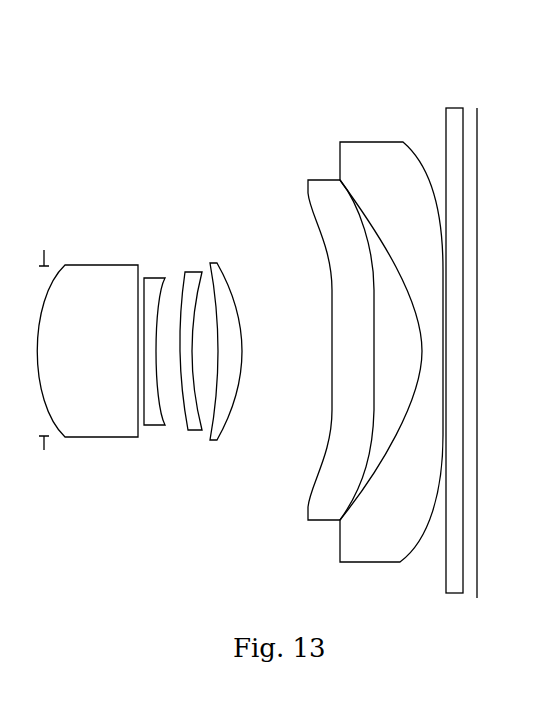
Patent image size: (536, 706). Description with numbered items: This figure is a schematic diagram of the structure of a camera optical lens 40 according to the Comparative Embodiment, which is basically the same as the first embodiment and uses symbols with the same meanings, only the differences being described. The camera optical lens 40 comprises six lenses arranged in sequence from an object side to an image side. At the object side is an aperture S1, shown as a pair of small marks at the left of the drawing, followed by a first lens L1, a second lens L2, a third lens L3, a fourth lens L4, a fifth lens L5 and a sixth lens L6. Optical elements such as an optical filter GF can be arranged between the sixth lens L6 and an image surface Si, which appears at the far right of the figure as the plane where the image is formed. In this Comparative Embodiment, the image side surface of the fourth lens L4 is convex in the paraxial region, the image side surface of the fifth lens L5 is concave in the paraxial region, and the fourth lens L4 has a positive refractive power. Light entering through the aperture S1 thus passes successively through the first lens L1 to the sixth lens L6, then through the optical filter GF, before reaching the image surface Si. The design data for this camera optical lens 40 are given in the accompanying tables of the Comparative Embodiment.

The camera optical lens 40 is at (293, 49).
The aperture S1 is at (41, 337).
The first lens L1 is at (87, 332).
The second lens L2 is at (154, 336).
The third lens L3 is at (191, 338).
The fourth lens L4 is at (225, 338).
The fifth lens L5 is at (338, 337).
The sixth lens L6 is at (391, 342).
The optical filter GF is at (448, 337).
The image surface Si is at (477, 334).